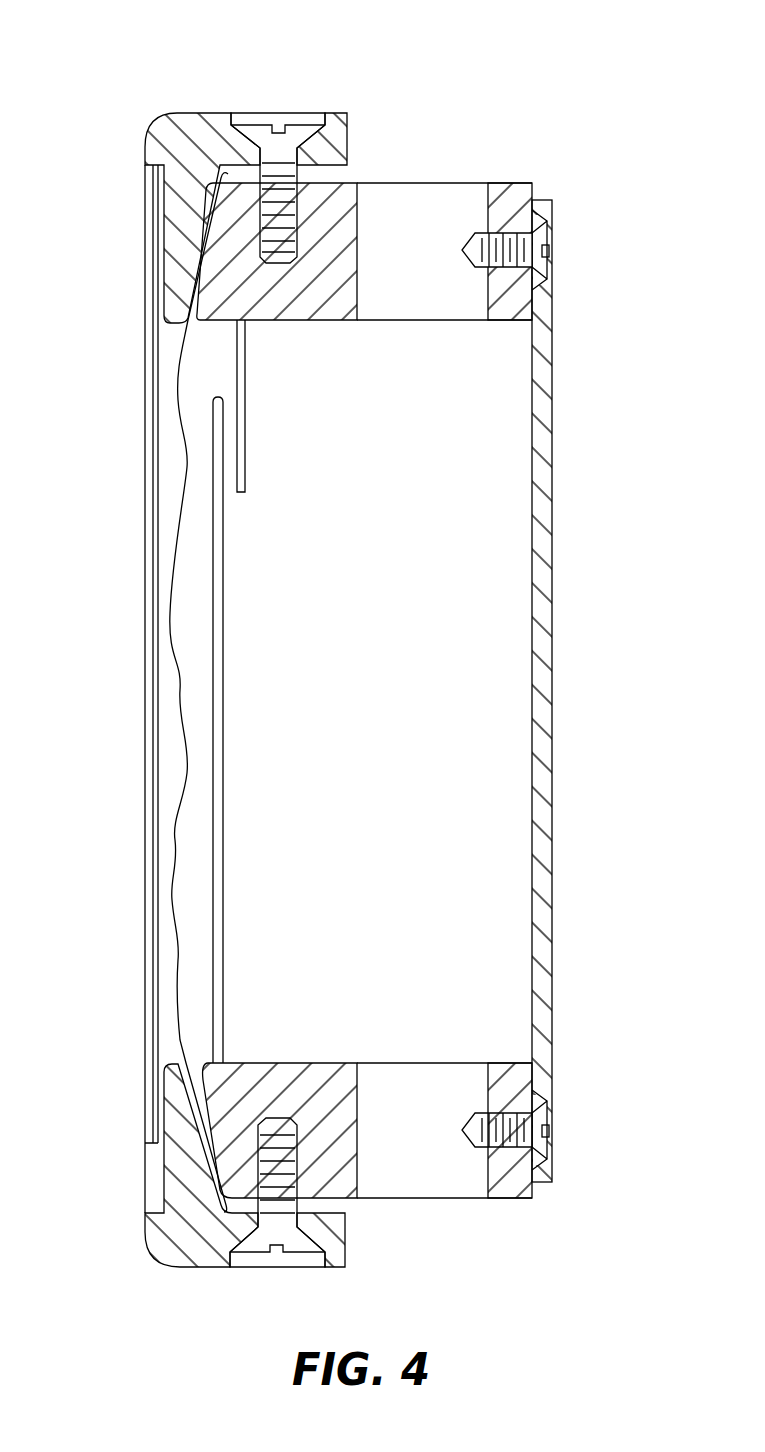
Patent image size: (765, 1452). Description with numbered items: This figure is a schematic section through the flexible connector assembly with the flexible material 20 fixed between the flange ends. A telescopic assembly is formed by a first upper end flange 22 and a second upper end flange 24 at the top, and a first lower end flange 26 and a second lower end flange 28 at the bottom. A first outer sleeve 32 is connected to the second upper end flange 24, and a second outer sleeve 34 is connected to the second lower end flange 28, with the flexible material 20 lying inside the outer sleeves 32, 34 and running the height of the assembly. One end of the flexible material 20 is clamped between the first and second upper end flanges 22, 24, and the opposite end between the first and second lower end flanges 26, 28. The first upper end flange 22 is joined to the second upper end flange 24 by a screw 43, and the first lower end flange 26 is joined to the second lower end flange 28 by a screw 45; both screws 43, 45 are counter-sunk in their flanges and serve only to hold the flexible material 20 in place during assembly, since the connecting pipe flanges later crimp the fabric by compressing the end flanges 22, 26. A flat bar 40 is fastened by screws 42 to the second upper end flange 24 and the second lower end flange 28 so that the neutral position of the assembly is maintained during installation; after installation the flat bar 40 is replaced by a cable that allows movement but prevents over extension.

The flexible material 20 is at (182, 553).
The first upper end flange 22 is at (193, 113).
The second upper end flange 24 is at (347, 190).
The first lower end flange 26 is at (145, 1240).
The second lower end flange 28 is at (292, 1062).
The first outer sleeve 32 is at (248, 381).
The second outer sleeve 34 is at (145, 522).
The flat bar 40 is at (552, 601).
The screws 42 is at (552, 263).
The screw 43 is at (302, 113).
The screw 45 is at (258, 1268).